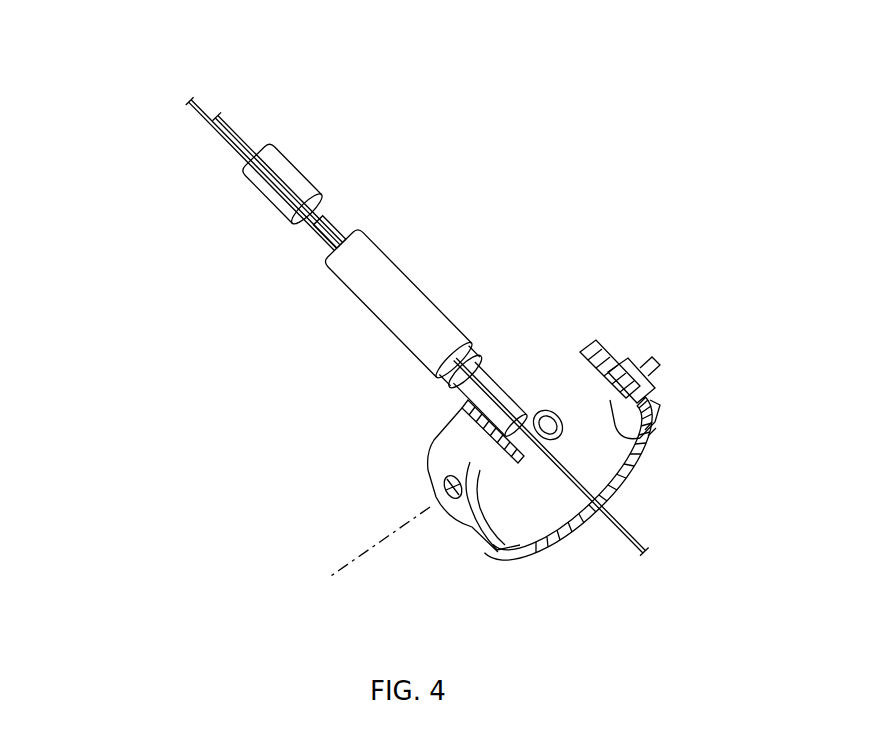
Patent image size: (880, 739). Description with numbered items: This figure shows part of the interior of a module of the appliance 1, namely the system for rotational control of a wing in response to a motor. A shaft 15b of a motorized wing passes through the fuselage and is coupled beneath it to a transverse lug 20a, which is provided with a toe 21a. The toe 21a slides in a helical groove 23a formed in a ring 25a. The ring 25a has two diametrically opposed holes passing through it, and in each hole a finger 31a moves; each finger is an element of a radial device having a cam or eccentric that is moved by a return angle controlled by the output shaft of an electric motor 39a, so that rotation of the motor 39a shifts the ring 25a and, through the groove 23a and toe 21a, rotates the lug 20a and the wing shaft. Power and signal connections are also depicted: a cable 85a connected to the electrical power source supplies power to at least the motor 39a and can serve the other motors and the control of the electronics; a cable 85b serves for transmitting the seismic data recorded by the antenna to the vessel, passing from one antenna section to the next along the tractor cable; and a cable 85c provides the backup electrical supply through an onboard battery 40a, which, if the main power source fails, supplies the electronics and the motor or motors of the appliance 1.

The appliance 1 is at (563, 263).
The cable 85a is at (197, 115).
The cable 85b is at (237, 130).
The cable 85c is at (330, 213).
The onboard battery 40a is at (257, 187).
The electric motor 39a is at (410, 282).
The ring 25a is at (463, 460).
The finger 31a is at (447, 487).
The helical groove 23a is at (482, 522).
The transverse lug 20a is at (657, 383).
The toe 21a is at (625, 423).
The shaft 15b is at (648, 360).